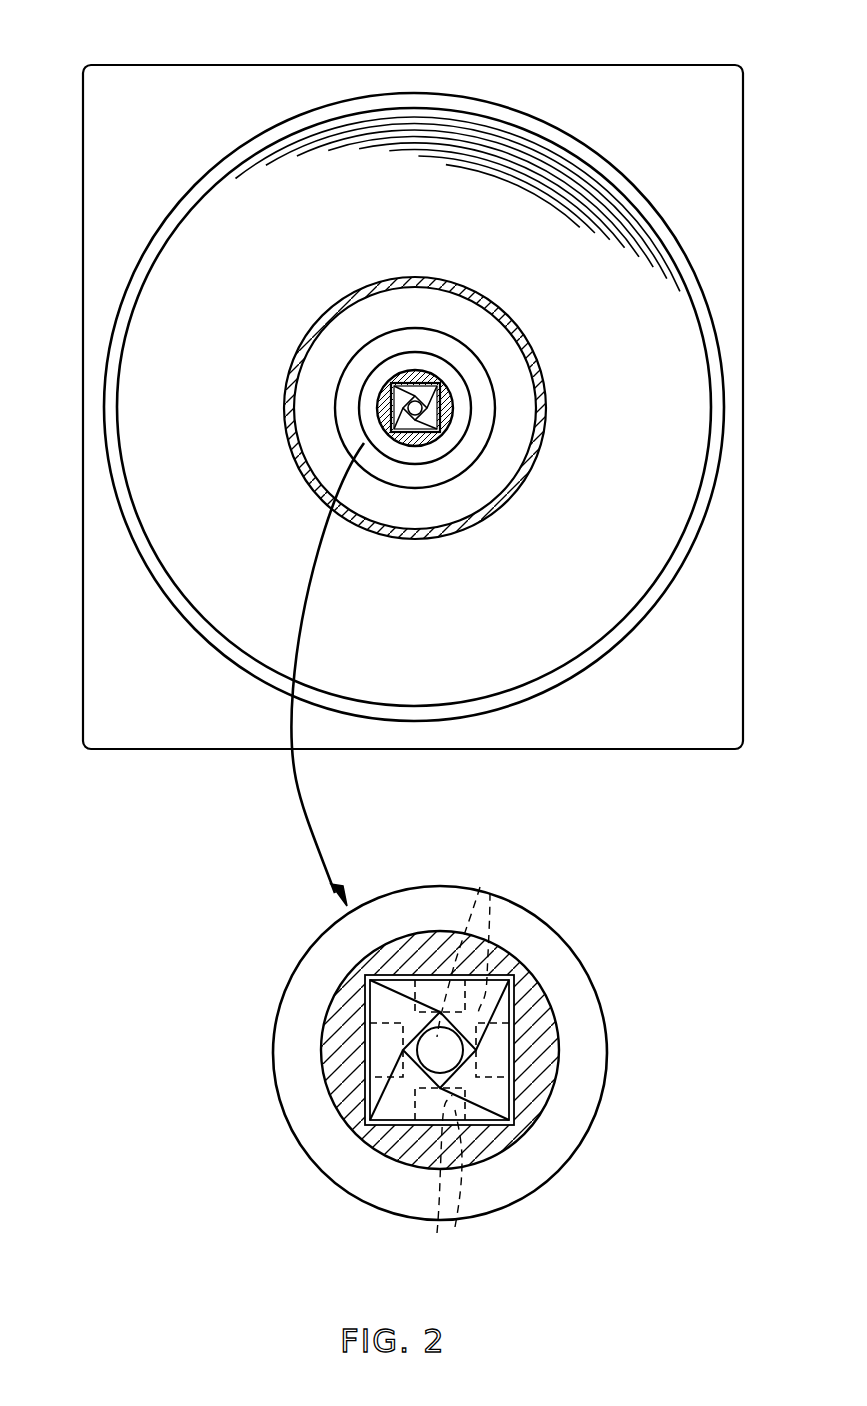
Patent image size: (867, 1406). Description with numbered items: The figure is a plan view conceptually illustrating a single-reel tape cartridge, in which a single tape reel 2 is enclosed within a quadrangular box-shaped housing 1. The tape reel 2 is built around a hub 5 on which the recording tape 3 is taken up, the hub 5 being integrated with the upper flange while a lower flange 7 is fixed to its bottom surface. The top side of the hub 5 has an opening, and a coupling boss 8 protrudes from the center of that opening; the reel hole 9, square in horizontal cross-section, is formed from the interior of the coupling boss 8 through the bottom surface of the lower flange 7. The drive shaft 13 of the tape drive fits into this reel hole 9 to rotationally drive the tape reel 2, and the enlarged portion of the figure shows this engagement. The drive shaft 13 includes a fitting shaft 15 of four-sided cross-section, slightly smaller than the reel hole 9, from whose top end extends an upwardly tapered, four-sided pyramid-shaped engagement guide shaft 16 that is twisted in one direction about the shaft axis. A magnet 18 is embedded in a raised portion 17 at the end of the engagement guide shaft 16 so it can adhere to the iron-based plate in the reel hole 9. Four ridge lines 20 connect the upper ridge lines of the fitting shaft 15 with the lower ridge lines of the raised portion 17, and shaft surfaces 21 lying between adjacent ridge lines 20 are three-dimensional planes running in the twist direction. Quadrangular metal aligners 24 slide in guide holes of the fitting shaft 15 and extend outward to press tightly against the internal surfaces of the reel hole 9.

The housing 1 is at (648, 65).
The tape reel 2 is at (487, 100).
The recording tape 3 is at (415, 127).
The hub 5 is at (515, 322).
The lower flange 7 is at (590, 657).
The coupling boss 8 is at (455, 398).
The reel hole 9 is at (414, 441).
The drive shaft 13 is at (392, 406).
The fitting shaft 15 is at (520, 1117).
The engagement guide shaft 16 is at (377, 1122).
The raised portion 17 is at (402, 1050).
The magnet 18 is at (440, 1012).
The ridge lines 20 is at (395, 973).
The shaft surfaces 21 is at (490, 990).
The aligners 24 is at (459, 1055).